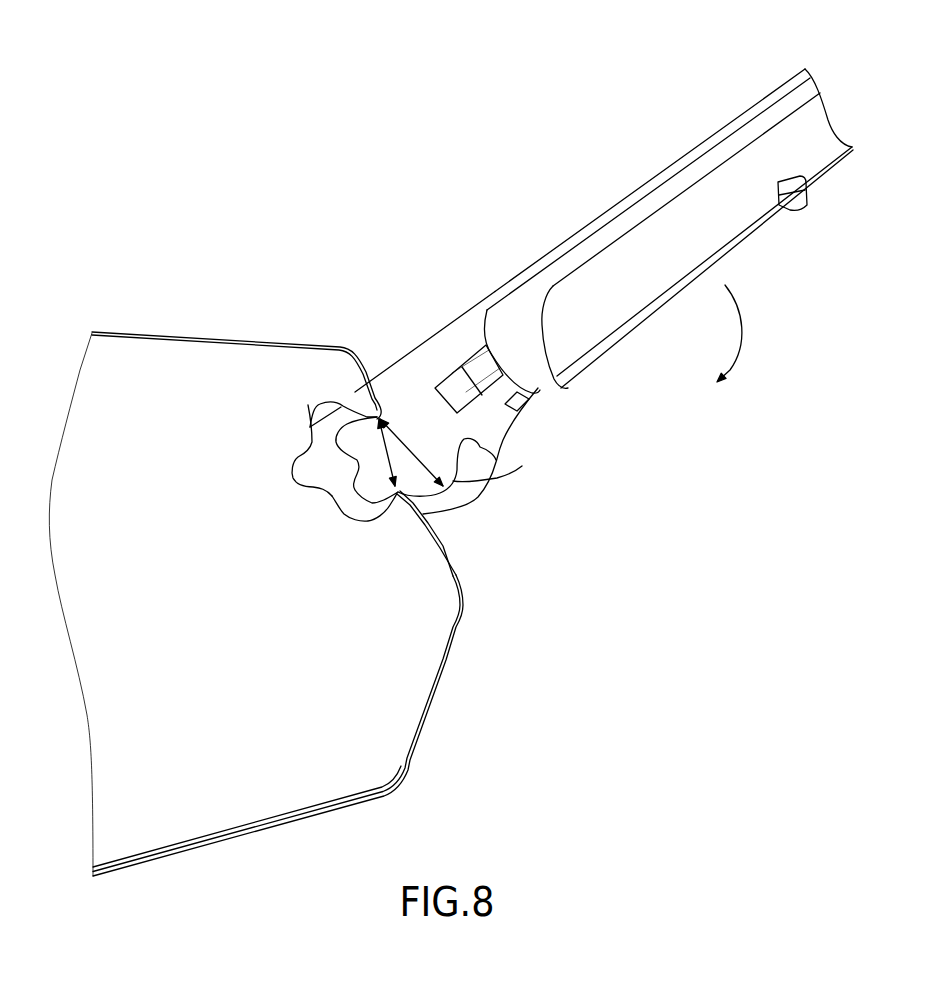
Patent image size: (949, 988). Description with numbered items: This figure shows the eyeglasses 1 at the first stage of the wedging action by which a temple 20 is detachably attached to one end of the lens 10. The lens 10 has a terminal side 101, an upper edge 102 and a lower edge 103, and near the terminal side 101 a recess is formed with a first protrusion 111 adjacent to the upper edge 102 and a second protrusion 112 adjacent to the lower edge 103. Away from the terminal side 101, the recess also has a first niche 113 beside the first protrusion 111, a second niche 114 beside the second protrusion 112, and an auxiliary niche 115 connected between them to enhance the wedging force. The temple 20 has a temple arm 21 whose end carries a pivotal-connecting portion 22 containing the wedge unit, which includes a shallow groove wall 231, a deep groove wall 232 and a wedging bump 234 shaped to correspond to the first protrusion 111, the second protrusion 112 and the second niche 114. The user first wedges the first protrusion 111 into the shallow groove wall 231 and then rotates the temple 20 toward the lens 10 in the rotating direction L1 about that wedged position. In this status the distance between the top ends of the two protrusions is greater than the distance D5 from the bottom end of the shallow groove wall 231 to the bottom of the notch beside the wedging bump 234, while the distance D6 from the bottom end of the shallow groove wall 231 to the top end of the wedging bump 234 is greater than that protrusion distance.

The electronic device assembly 1 is at (50, 140).
The lens 10 is at (145, 345).
The terminal side 101 is at (353, 386).
The upper edge 102 is at (193, 340).
The lower edge 103 is at (276, 822).
The first protrusion 111 is at (362, 396).
The second protrusion 112 is at (425, 515).
The first niche 113 is at (308, 405).
The second niche 114 is at (361, 522).
The auxiliary niche 115 is at (292, 473).
The temple 20 is at (590, 172).
The temple arm 21 is at (571, 238).
The pivotal-connecting portion 22 is at (470, 323).
The shallow groove wall 231 is at (400, 403).
The deep groove wall 232 is at (497, 455).
The wedging bump 234 is at (497, 480).
The distance D5 is at (374, 452).
The distance D6 is at (411, 452).
The rotating direction L1 is at (750, 333).